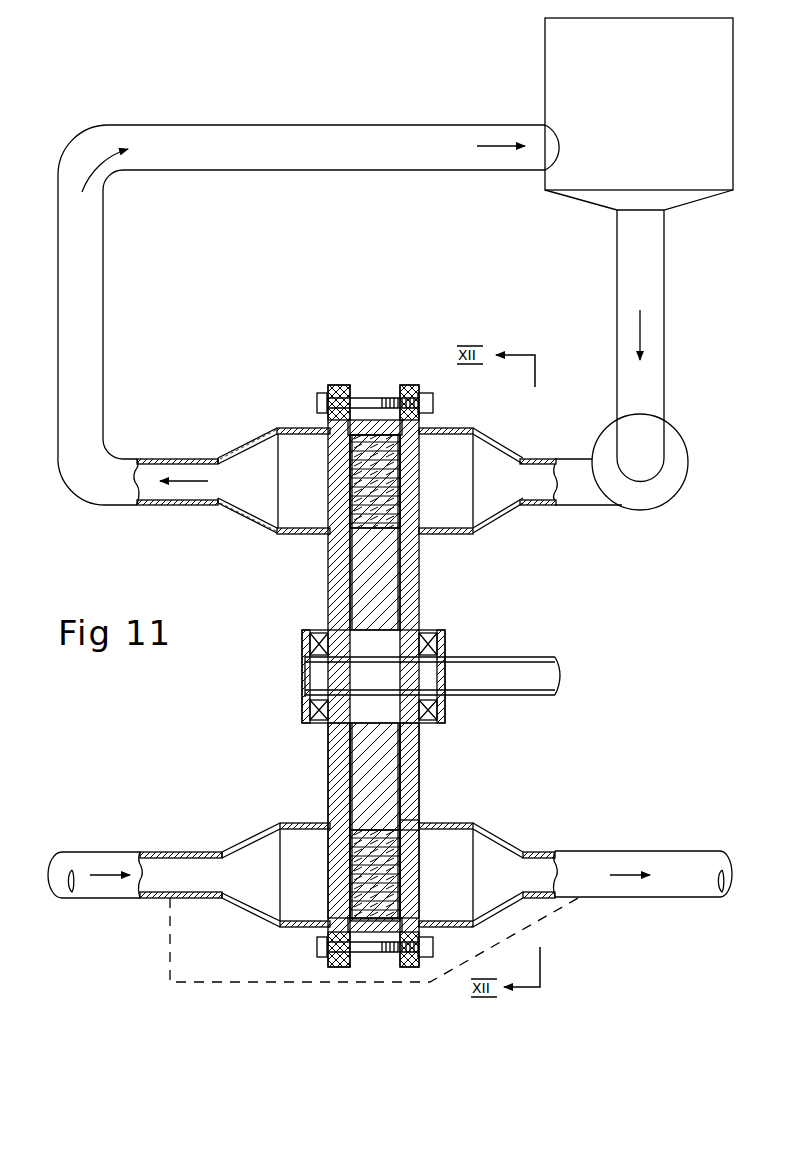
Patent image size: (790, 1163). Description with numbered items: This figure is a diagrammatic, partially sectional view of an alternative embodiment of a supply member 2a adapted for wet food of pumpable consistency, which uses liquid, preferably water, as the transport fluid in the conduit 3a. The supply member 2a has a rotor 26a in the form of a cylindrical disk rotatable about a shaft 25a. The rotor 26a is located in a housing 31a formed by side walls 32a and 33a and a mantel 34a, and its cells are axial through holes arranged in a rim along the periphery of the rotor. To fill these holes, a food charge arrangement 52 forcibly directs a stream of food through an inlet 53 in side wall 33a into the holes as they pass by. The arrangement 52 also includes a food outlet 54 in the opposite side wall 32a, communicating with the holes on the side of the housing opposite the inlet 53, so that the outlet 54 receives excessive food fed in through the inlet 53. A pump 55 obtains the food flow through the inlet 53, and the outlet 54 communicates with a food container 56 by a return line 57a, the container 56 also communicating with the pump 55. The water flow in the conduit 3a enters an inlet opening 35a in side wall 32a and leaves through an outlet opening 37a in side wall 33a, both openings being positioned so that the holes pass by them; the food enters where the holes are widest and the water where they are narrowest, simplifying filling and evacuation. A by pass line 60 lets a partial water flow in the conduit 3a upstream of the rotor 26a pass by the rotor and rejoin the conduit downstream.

The supply member 2a is at (430, 354).
The conduit 3a is at (117, 850).
The shaft 25a is at (513, 670).
The rotor 26a is at (382, 568).
The housing 31a is at (424, 764).
The side wall 32a is at (333, 772).
The side wall 33a is at (410, 794).
The mantel 34a is at (360, 420).
The inlet opening 35a is at (336, 872).
The outlet opening 37a is at (415, 871).
The food charge arrangement 52 is at (606, 516).
The inlet 53 is at (415, 470).
The food outlet 54 is at (335, 462).
The pump 55 is at (605, 444).
The food container 56 is at (690, 162).
The return line 57a is at (247, 170).
The by pass line 60 is at (378, 984).